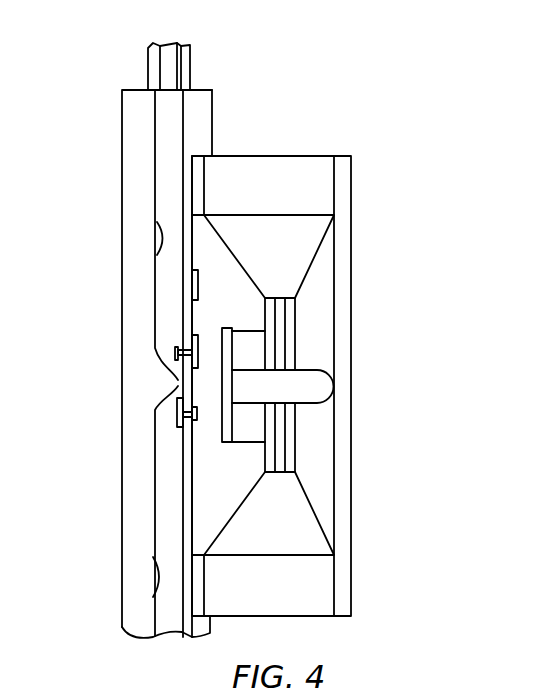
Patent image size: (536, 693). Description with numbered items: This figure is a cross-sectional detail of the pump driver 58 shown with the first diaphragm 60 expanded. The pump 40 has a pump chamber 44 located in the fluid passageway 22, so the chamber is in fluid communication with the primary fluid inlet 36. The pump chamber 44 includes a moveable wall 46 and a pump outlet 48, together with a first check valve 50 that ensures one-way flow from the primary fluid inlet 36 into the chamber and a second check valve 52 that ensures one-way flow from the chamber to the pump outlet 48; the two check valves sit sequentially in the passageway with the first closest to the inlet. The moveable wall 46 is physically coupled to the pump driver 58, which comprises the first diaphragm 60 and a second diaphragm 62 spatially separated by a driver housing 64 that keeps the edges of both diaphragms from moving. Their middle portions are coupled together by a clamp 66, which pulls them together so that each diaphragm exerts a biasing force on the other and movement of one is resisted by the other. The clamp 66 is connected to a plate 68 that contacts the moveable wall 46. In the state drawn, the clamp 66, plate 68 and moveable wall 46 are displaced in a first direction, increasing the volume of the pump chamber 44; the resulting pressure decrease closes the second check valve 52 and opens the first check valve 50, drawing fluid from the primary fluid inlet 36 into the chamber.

The fluid passageway 22 is at (183, 240).
The primary fluid inlet 36 is at (168, 93).
The pump 40 is at (408, 157).
The pump chamber 44 is at (198, 443).
The moveable wall 46 is at (223, 327).
The pump outlet 48 is at (167, 465).
The first check valve 50 is at (164, 340).
The second check valve 52 is at (162, 410).
The pump driver 58 is at (305, 108).
The first diaphragm 60 is at (204, 203).
The second diaphragm 62 is at (334, 207).
The driver housing 64 is at (312, 156).
The clamp 66 is at (286, 305).
The plate 68 is at (235, 350).